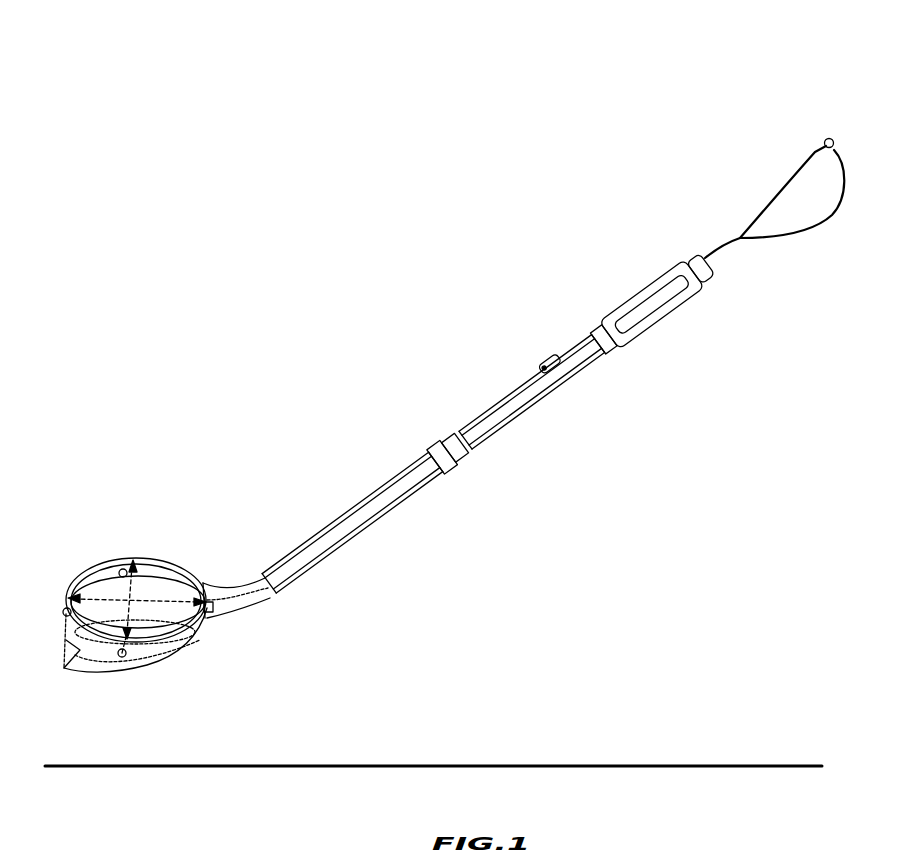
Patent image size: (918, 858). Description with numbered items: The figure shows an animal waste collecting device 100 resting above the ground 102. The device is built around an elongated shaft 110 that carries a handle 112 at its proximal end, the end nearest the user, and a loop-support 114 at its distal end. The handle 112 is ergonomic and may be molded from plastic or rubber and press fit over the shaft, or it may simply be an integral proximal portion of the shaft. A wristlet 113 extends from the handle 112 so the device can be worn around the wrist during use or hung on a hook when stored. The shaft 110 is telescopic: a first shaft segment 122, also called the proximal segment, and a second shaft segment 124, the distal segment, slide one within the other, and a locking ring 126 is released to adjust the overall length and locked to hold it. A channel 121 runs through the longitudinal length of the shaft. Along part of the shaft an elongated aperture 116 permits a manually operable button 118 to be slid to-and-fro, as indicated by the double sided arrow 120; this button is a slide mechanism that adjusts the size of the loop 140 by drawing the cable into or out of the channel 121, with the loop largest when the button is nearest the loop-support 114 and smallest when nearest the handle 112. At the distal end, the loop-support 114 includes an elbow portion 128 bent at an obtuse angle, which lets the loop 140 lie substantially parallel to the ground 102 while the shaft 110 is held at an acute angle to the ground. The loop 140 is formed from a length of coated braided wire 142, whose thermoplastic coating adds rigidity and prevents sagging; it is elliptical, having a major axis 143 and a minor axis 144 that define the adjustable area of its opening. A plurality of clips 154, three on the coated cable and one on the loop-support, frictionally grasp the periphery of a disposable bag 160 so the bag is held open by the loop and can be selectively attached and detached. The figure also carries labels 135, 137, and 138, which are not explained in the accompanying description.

The waste collecting device 100 is at (378, 77).
The ground 102 is at (752, 763).
The elongated shaft 110 is at (368, 310).
The handle 112 is at (667, 287).
The wristlet 113 is at (777, 180).
The loop-support 114 is at (255, 597).
The elongated aperture 116 is at (523, 392).
The manually operable button 118 is at (550, 367).
The double sided arrow 120 is at (505, 379).
The channel 121 is at (415, 487).
The first shaft segment 122 is at (492, 433).
The second shaft segment 124 is at (397, 485).
The locking ring 126 is at (452, 470).
The elbow portion 128 is at (255, 607).
The pivot 135 is at (203, 582).
The clip 137 is at (201, 622).
The connector 138 is at (207, 623).
The loop 140 is at (158, 525).
The coated braided wire 142 is at (155, 563).
The major axis 143 is at (157, 593).
The minor axis 144 is at (135, 570).
The clips 154 is at (63, 610).
The disposable bag 160 is at (117, 678).